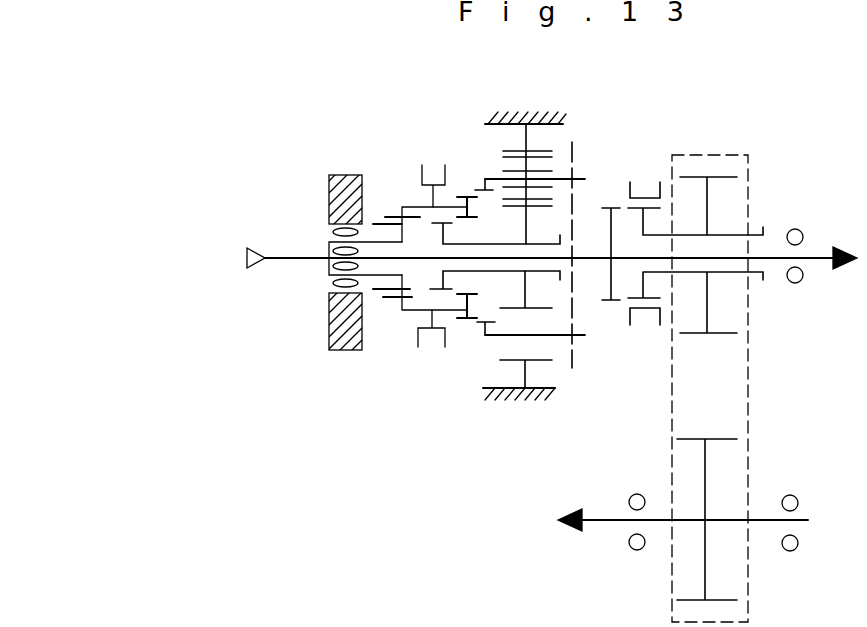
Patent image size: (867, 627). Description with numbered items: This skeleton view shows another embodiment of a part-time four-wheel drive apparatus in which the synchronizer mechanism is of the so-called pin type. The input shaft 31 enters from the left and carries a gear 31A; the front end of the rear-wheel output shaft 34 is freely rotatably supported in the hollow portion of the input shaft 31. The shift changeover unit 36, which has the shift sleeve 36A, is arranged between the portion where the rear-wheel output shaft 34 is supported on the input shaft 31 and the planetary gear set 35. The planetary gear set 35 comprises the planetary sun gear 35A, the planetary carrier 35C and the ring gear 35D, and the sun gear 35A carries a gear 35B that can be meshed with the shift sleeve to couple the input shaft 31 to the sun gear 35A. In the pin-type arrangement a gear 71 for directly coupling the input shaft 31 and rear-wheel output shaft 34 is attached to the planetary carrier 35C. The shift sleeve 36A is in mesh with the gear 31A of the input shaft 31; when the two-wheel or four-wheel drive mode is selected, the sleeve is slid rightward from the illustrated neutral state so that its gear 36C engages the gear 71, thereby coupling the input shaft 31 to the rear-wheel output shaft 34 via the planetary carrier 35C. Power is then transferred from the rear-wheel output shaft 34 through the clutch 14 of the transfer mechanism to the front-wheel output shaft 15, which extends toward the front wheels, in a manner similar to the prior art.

The input shaft 31 is at (291, 252).
The gear of the input shaft 31A is at (378, 223).
The shift changeover unit 36 is at (397, 167).
The shift sleeve 36A is at (412, 206).
The gear of the shift sleeve 36C is at (467, 194).
The gear for directly coupling the input shaft and rear-wheel output shaft 71 is at (483, 257).
The planetary sun gear 35A is at (526, 243).
The planetary carrier 35C is at (485, 208).
The ring gear 35D is at (512, 113).
The gear of planetary sun gear 35B is at (440, 292).
The planetary gear set 35 is at (637, 84).
The rear-wheel output shaft 34 is at (589, 262).
The clutch 14 is at (637, 174).
The front-wheel output shaft 15 is at (606, 518).